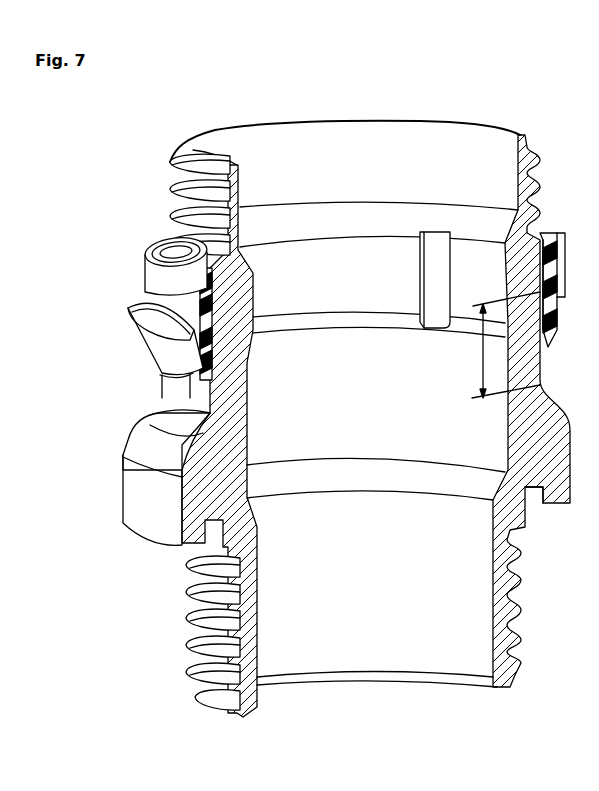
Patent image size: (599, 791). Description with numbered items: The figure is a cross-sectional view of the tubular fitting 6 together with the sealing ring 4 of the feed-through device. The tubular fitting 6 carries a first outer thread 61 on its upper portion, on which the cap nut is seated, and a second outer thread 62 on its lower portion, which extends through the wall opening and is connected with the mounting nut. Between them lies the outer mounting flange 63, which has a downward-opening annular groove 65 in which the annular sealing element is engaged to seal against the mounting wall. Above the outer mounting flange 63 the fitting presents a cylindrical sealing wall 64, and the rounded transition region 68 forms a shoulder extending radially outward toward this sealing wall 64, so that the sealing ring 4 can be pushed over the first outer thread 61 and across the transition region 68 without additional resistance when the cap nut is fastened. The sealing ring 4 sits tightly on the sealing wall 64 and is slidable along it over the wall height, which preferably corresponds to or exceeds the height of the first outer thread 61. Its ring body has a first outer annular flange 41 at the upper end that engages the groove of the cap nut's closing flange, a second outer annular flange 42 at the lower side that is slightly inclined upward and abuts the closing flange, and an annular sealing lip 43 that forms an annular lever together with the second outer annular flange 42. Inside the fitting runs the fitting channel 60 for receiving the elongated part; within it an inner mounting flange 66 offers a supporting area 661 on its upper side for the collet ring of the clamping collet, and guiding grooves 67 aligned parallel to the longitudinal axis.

The sealing ring 4 is at (120, 323).
The tubular fitting 6 is at (276, 188).
The first outer annular flange 41 is at (153, 263).
The second outer annular flange 42 is at (158, 327).
The annular sealing lip 43 is at (182, 378).
The fitting channel 60 is at (375, 603).
The first outer thread 61 is at (173, 220).
The second outer thread 62 is at (193, 620).
The outer mounting flange 63 is at (142, 507).
The sealing wall 64 is at (190, 393).
The annular groove 65 is at (535, 497).
The inner mounting flange 66 is at (368, 297).
The guiding grooves 67 is at (437, 300).
The transition region 68 is at (543, 250).
The supporting area 661 is at (365, 217).